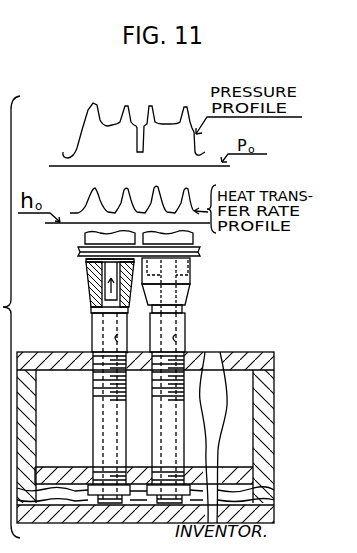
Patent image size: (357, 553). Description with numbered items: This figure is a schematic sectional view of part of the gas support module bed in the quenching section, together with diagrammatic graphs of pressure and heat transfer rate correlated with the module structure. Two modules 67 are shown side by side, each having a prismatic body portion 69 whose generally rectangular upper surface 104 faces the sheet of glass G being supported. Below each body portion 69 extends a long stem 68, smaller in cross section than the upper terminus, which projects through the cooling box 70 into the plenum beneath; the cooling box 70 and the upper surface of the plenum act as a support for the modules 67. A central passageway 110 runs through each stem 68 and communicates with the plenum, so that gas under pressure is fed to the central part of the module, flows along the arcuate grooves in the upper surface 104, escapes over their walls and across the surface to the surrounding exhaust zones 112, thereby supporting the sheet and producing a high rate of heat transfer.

The gasket plate G is at (82, 250).
The module 67 is at (197, 240).
The upper surface 104 is at (86, 261).
The prismatic body portion 69 is at (190, 277).
The stem 68 is at (90, 327).
The central passageway 110 is at (120, 335).
The exhaust zones 112 is at (138, 322).
The cooling box 70 is at (145, 437).